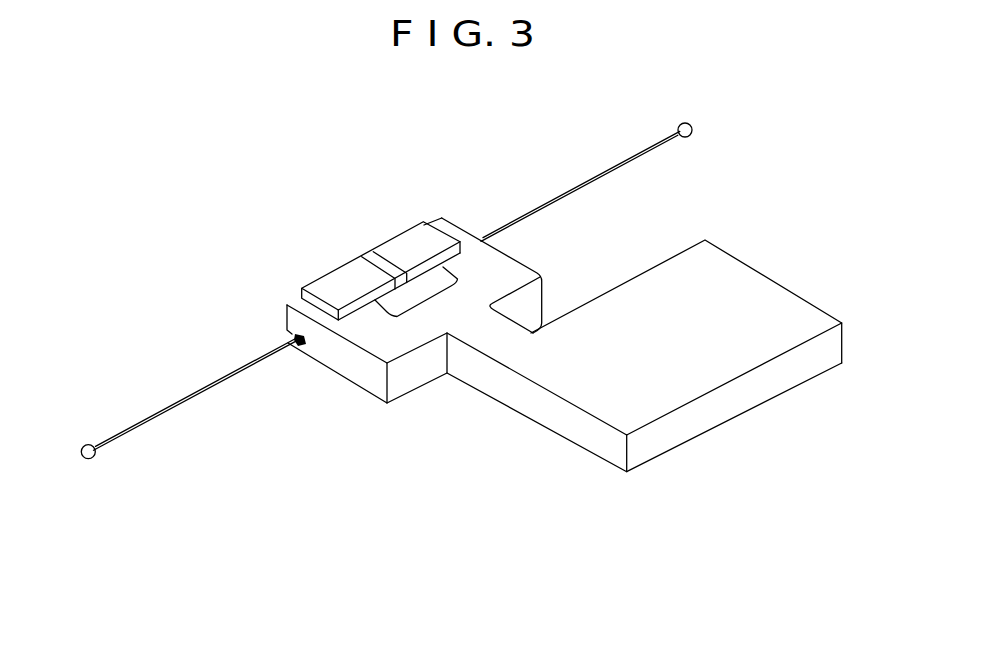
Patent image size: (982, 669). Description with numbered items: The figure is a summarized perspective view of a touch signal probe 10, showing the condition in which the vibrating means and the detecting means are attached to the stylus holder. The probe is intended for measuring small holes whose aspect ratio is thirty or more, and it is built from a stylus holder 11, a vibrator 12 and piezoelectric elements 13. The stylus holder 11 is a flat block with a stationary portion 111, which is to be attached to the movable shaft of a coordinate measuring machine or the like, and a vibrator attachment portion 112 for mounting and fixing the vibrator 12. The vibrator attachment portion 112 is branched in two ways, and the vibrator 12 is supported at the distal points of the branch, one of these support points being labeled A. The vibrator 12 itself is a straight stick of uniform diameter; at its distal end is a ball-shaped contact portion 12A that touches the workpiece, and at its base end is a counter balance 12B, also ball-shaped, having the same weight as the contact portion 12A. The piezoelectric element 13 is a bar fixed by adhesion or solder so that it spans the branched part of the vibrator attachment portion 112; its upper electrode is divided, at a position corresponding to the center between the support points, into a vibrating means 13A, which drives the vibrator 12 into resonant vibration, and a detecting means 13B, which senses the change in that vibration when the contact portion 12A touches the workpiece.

The touch signal probe 10 is at (132, 201).
The stylus holder 11 is at (725, 290).
The stationary portion 111 is at (688, 424).
The vibrator attachment portion 112 is at (500, 276).
The vibrator 12 is at (203, 388).
The contact portion 12A is at (92, 458).
The counter balance 12B is at (690, 137).
The piezoelectric element 13 is at (372, 255).
The vibrating means 13A is at (334, 282).
The detecting means 13B is at (402, 245).
The support point A is at (297, 350).